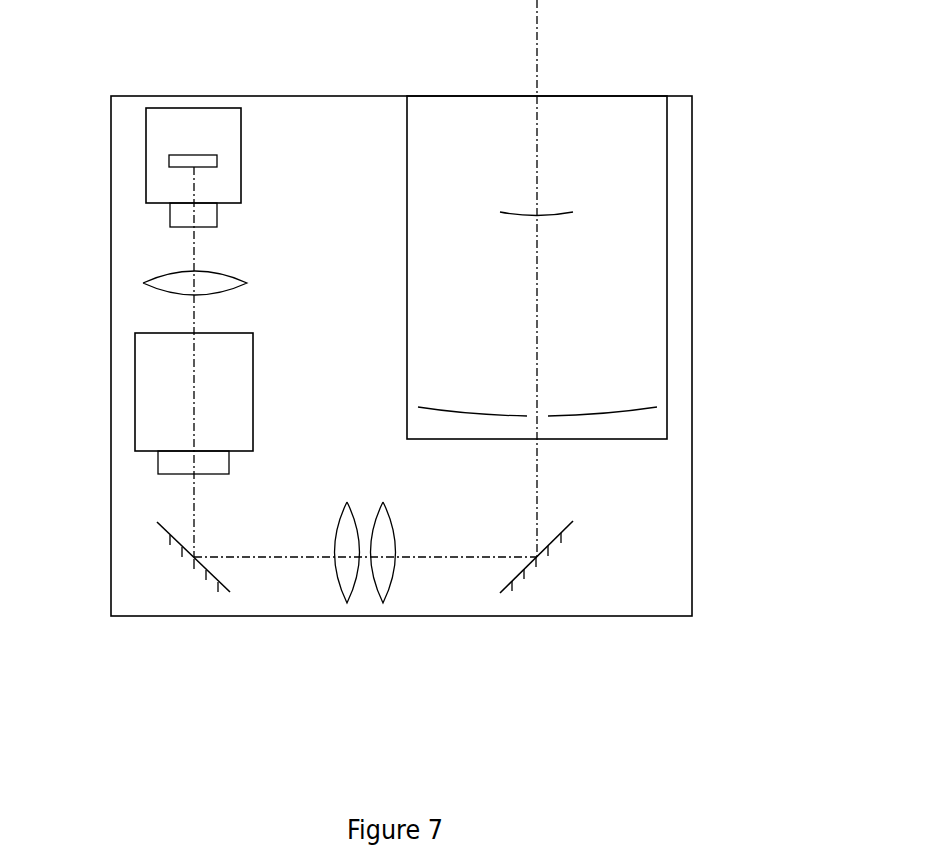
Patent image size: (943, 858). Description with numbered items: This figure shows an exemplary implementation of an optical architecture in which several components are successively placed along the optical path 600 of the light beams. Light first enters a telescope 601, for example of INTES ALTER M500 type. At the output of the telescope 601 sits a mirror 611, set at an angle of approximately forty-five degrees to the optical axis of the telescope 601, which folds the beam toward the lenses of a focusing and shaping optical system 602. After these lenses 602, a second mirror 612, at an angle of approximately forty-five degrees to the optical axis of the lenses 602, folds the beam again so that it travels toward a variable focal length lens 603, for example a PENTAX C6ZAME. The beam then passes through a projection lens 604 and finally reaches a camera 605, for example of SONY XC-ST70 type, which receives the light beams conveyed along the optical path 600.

The optical path 600 is at (538, 72).
The telescope 601 is at (653, 334).
The focusing and shaping optical system 602 is at (382, 582).
The variable focal length lens 603 is at (147, 380).
The projection lens 604 is at (170, 283).
The camera 605 is at (157, 132).
The mirror 611 is at (548, 546).
The mirror 612 is at (180, 545).